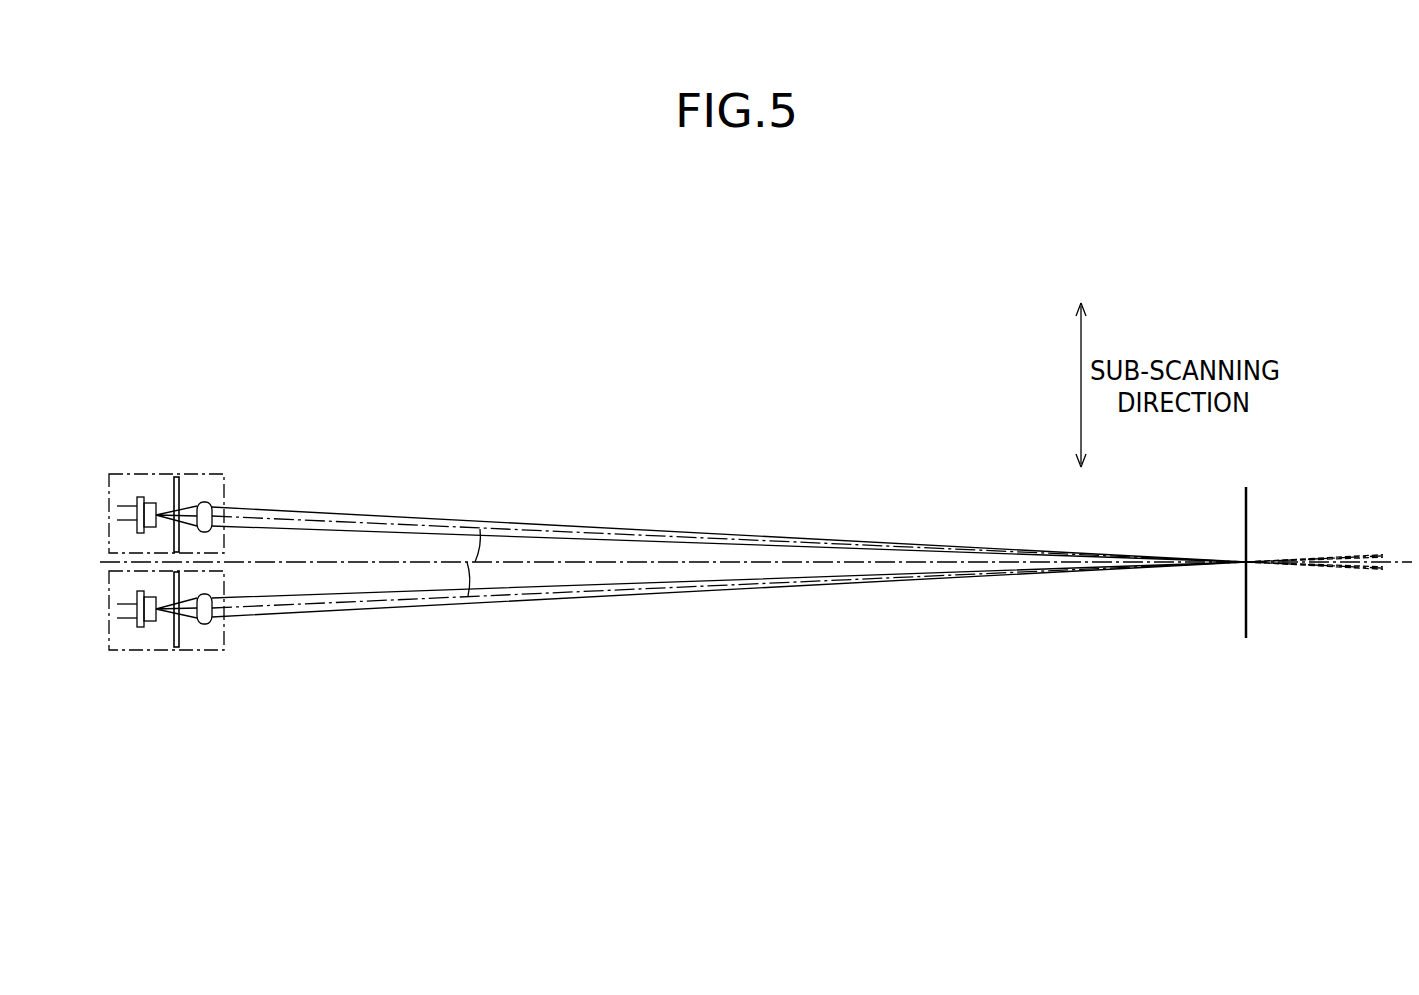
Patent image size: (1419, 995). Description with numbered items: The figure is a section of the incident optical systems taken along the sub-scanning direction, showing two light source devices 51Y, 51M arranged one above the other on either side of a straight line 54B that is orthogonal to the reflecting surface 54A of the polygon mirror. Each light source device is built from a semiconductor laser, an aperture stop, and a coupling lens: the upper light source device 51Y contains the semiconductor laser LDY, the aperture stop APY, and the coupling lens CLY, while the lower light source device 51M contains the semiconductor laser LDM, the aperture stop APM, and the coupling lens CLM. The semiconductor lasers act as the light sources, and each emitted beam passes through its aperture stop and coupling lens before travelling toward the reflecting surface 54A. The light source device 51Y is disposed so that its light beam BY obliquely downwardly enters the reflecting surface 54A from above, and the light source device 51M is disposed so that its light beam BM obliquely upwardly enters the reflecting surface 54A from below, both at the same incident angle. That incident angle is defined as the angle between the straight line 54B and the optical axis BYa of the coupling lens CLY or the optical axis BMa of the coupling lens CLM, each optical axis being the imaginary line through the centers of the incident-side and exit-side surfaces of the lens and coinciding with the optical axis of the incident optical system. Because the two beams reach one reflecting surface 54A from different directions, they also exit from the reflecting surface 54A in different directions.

The semiconductor laser LDY is at (141, 496).
The semiconductor laser LDM is at (141, 628).
The aperture stop APY is at (177, 477).
The aperture stop APM is at (177, 648).
The coupling lens CLY is at (204, 501).
The coupling lens CLM is at (204, 630).
The light source device 51Y is at (209, 466).
The light source device 51M is at (209, 656).
The light beam BY is at (545, 530).
The optical axis BYa is at (415, 527).
The light beam BM is at (548, 600).
The optical axis BMa is at (418, 598).
The straight line 54B is at (627, 562).
The reflecting surface 54A is at (1246, 610).